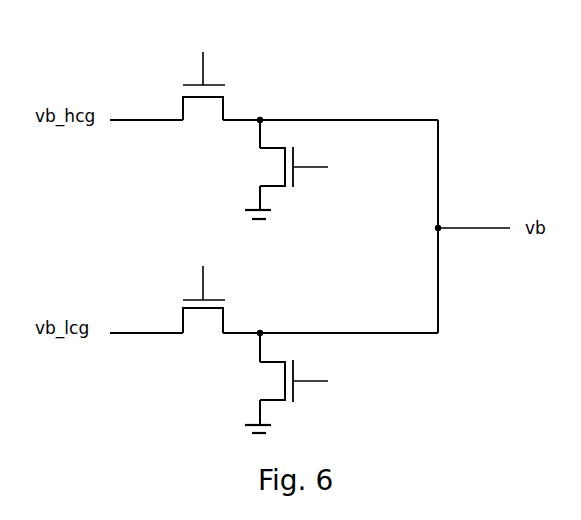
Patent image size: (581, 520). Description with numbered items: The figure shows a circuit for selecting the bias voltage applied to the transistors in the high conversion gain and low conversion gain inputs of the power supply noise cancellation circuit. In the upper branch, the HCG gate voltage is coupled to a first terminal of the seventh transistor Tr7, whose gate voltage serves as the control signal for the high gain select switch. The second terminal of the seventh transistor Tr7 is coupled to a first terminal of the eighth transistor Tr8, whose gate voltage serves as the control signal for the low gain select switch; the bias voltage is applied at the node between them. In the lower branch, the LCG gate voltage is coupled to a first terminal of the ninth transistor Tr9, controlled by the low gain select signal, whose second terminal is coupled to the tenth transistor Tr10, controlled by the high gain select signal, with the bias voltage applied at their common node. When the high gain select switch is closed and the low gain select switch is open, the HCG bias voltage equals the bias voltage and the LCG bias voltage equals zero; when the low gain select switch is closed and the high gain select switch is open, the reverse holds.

The seventh transistor Tr7 is at (203, 79).
The eighth transistor Tr8 is at (308, 169).
The ninth transistor Tr9 is at (203, 291).
The tenth transistor Tr10 is at (305, 383).